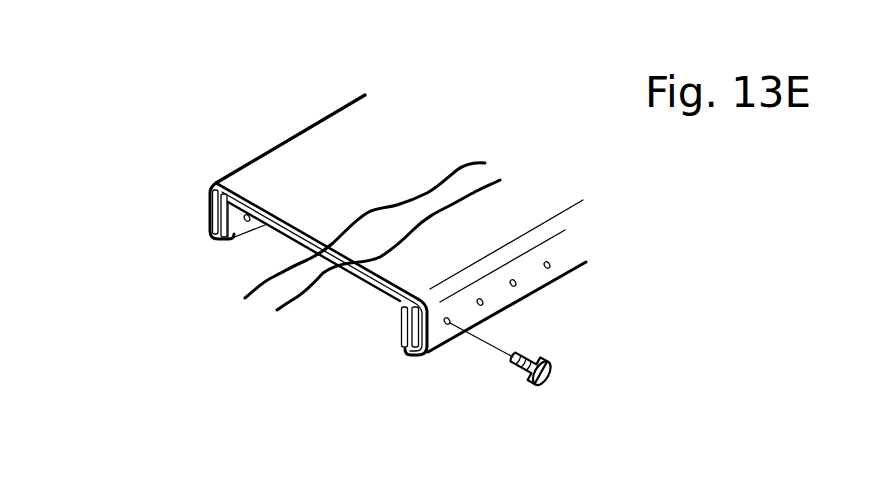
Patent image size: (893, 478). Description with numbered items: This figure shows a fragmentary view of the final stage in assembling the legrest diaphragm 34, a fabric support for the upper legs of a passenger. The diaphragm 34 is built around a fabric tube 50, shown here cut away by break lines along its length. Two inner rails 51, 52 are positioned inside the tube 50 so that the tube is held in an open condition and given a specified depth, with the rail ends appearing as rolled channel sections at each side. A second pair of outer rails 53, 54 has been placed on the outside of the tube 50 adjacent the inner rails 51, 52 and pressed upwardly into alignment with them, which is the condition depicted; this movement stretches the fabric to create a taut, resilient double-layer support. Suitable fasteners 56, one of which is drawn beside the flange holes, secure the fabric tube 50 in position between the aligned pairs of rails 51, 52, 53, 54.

The legrest diaphragm 34 is at (260, 122).
The fabric tube 50 is at (419, 130).
The inner rail 51 is at (430, 352).
The inner rail 52 is at (223, 218).
The outer rail 53 is at (398, 332).
The outer rail 54 is at (243, 230).
The fastener 56 is at (553, 366).